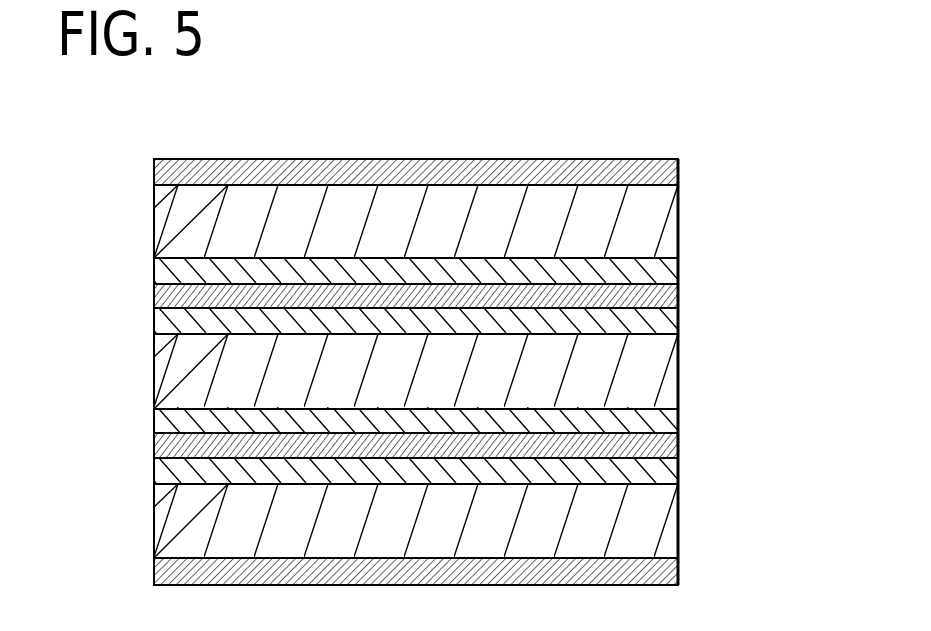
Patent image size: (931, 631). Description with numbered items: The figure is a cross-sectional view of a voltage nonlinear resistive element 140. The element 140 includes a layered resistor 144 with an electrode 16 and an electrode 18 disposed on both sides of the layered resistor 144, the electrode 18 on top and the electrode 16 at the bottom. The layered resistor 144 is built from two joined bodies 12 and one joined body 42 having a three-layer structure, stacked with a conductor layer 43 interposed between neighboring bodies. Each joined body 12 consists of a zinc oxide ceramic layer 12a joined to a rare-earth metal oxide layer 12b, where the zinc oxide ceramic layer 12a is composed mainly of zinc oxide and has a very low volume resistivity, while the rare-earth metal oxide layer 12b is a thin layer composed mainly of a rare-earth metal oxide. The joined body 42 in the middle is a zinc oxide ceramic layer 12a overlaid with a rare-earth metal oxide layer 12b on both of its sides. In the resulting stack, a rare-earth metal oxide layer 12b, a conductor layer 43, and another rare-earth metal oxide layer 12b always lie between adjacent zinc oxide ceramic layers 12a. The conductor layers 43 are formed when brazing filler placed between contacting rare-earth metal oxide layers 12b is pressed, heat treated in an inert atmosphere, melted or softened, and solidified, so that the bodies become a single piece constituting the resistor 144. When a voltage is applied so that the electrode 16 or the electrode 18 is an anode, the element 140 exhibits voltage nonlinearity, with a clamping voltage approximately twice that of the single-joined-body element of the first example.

The voltage nonlinear resistive element 140 is at (665, 150).
The electrode 18 is at (665, 172).
The electrode 16 is at (665, 568).
The zinc oxide ceramic layer 12a is at (665, 215).
The rare-earth metal oxide layer 12b is at (665, 274).
The conductor layer 43 is at (665, 297).
The joined body 12 is at (778, 188).
The joined body having a three-layer structure 42 is at (778, 312).
The layered resistor 144 is at (142, 187).